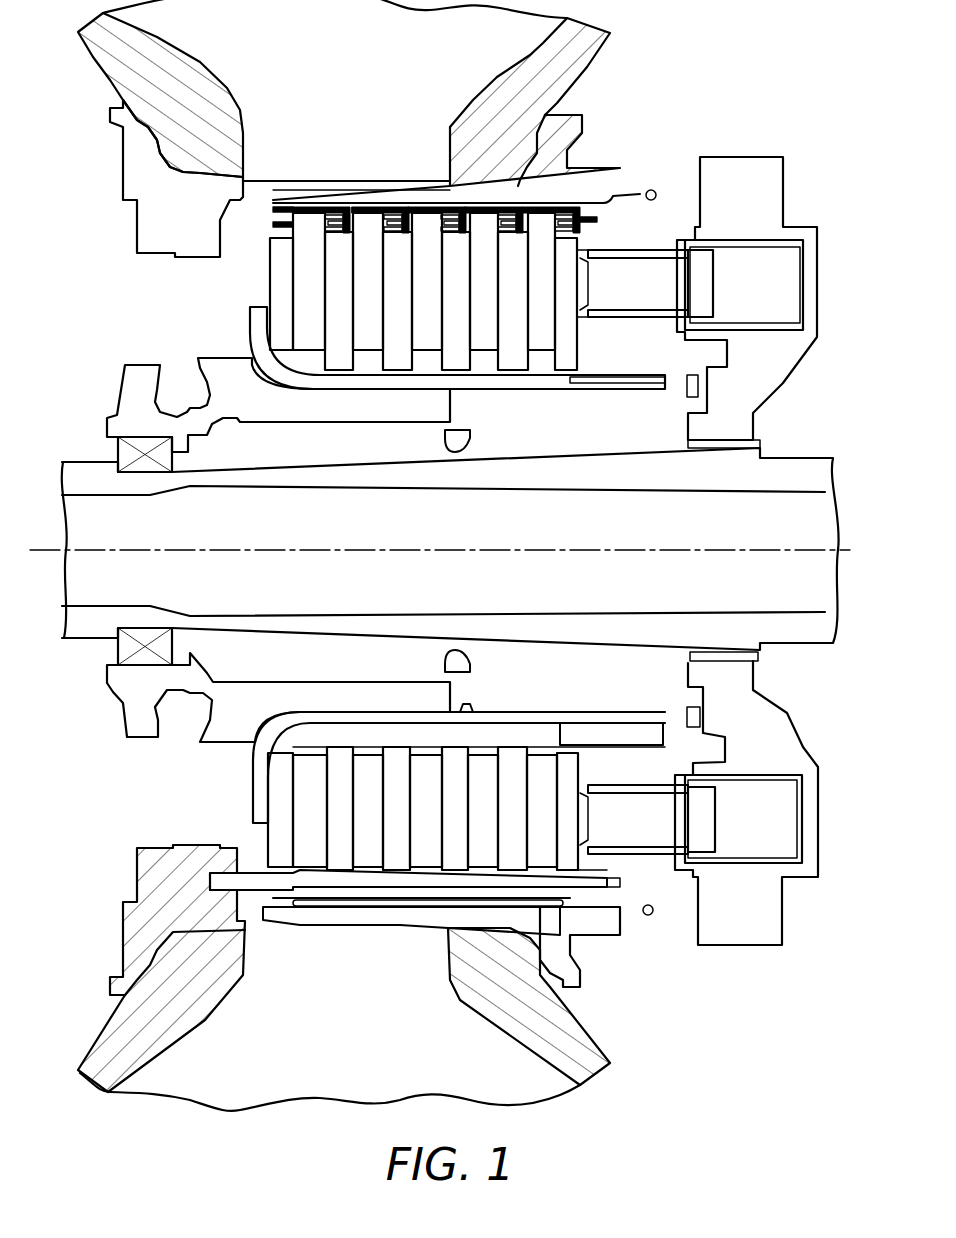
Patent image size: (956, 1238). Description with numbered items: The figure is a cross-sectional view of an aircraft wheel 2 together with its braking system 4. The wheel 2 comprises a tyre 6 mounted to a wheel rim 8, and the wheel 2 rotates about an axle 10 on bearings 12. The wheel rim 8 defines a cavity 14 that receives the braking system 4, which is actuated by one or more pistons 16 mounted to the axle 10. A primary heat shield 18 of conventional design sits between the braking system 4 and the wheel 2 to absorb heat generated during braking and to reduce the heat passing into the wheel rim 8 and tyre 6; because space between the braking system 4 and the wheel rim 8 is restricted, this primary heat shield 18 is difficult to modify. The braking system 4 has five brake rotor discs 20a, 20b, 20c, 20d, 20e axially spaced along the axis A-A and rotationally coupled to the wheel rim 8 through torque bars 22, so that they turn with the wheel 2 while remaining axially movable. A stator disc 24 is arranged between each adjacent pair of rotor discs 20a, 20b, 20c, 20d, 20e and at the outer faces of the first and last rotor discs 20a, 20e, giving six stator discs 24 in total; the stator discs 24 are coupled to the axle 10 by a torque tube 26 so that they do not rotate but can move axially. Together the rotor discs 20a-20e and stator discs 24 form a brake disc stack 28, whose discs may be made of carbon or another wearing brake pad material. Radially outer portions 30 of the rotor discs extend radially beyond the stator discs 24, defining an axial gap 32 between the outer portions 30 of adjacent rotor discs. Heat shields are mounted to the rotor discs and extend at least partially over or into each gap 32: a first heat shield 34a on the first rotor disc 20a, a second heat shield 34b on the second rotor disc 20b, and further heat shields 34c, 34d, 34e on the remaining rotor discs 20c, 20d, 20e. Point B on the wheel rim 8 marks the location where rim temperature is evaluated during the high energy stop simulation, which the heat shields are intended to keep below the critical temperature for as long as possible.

The aircraft wheel 2 is at (78, 100).
The braking system 4 is at (738, 65).
The tyre 6 is at (190, 78).
The wheel rim 8 is at (130, 178).
The axle 10 is at (80, 462).
The bearings 12 is at (107, 652).
The cavity 14 is at (638, 357).
The pistons 16 is at (663, 250).
The primary heat shield 18 is at (603, 197).
The first rotor disc 20a is at (300, 352).
The second rotor disc 20b is at (368, 352).
The third rotor disc 20c is at (425, 352).
The fourth rotor disc 20d is at (485, 352).
The fifth rotor disc 20e is at (540, 352).
The torque bars 22 is at (263, 925).
The stator disc 24 is at (337, 370).
The torque tube 26 is at (252, 320).
The brake disc stack 28 is at (258, 293).
The radially outer portions 30 is at (360, 215).
The axial gap 32 is at (328, 215).
The first heat shield 34a is at (300, 210).
The second heat shield 34b is at (340, 212).
The labyrinth seal 34c is at (400, 210).
The labyrinth seal 34d is at (462, 210).
The labyrinth seal 34e is at (545, 210).
The axis A is at (446, 550).
The point B is at (400, 196).